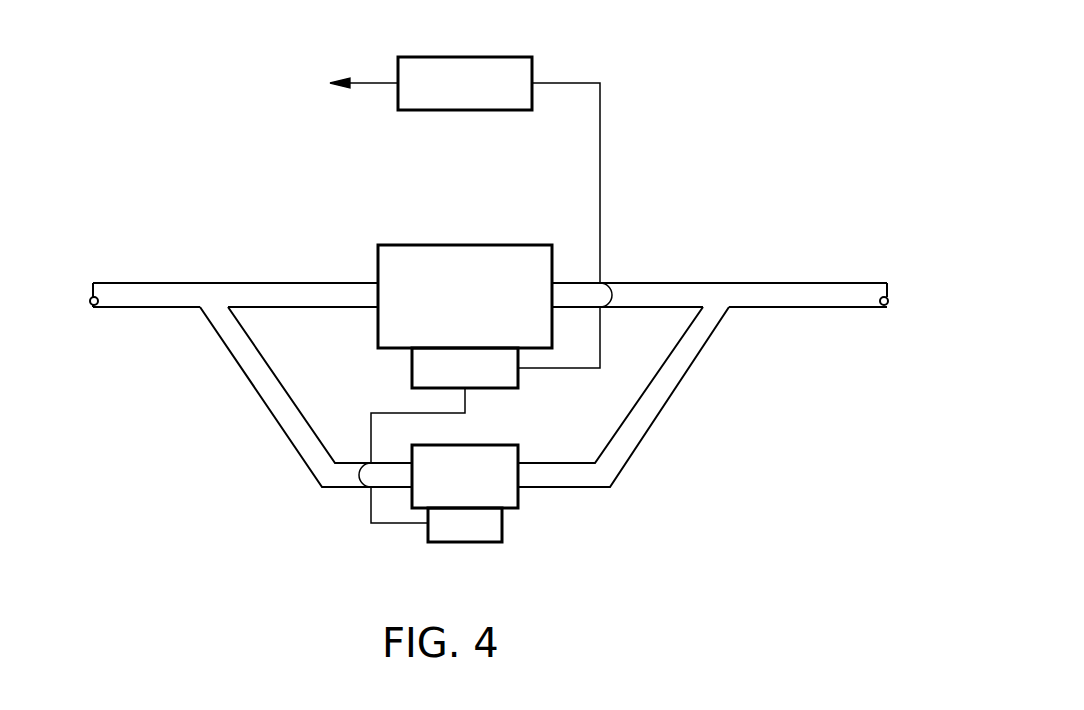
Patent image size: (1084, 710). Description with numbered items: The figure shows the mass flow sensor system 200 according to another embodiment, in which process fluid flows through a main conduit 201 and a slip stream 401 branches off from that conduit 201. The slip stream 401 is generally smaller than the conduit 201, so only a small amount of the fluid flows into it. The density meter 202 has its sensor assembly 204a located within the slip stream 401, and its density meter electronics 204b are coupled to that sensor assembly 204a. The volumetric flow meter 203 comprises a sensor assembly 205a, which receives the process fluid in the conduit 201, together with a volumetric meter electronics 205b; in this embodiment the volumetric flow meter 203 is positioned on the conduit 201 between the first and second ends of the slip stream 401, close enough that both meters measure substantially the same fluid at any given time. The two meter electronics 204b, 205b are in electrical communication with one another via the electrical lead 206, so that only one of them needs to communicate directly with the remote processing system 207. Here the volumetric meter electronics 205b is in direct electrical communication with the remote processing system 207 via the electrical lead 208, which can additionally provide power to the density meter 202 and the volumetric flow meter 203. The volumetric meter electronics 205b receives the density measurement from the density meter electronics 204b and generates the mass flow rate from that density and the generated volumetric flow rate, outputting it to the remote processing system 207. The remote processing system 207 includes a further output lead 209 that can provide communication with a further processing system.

The mass flow sensor system 200 is at (750, 122).
The conduit 201 is at (268, 284).
The density meter 202 is at (535, 529).
The volumetric flow meter 203 is at (495, 243).
The sensor assembly 204a is at (486, 491).
The density meter electronics 204b is at (486, 535).
The sensor assembly 205a is at (487, 303).
The volumetric meter electronics 205b is at (487, 373).
The electrical lead 206 is at (397, 413).
The remote processing system 207 is at (475, 92).
The electrical lead 208 is at (600, 127).
The output lead 209 is at (366, 80).
The slip stream 401 is at (280, 411).